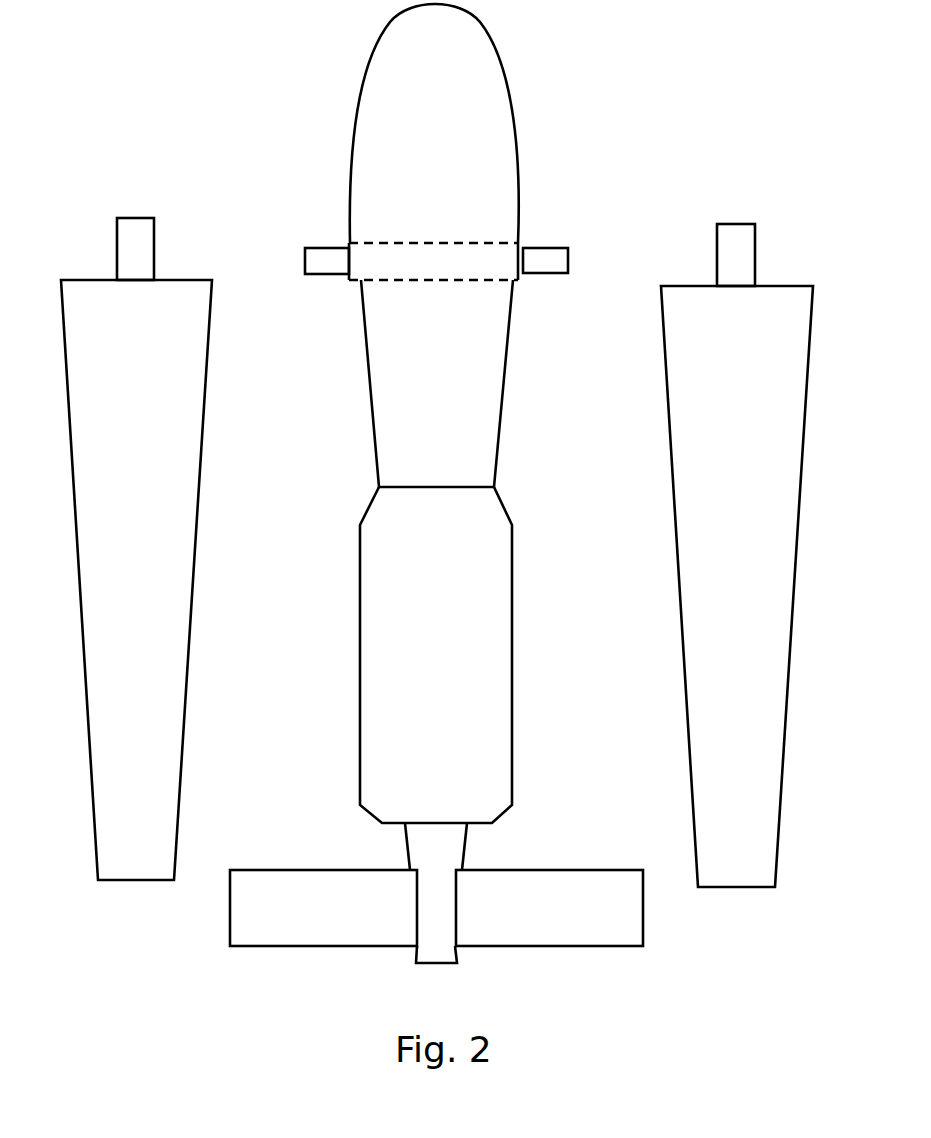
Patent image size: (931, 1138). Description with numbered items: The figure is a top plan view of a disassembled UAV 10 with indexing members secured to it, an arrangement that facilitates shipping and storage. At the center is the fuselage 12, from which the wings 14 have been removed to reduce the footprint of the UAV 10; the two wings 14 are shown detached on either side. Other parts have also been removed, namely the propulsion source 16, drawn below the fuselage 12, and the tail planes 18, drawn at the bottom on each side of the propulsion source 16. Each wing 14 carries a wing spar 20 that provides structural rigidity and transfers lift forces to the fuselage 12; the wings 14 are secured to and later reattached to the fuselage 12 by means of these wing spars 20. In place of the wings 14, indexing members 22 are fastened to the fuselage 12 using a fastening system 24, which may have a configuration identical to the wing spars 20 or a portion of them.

The UAV 10 is at (183, 118).
The fuselage 12 is at (449, 224).
The wings 14 is at (166, 382).
The propulsion source 16 is at (449, 644).
The tail planes 18 is at (320, 907).
The wing spars 20 is at (136, 244).
The indexing members 22 is at (328, 260).
The fastening system 24 is at (503, 242).